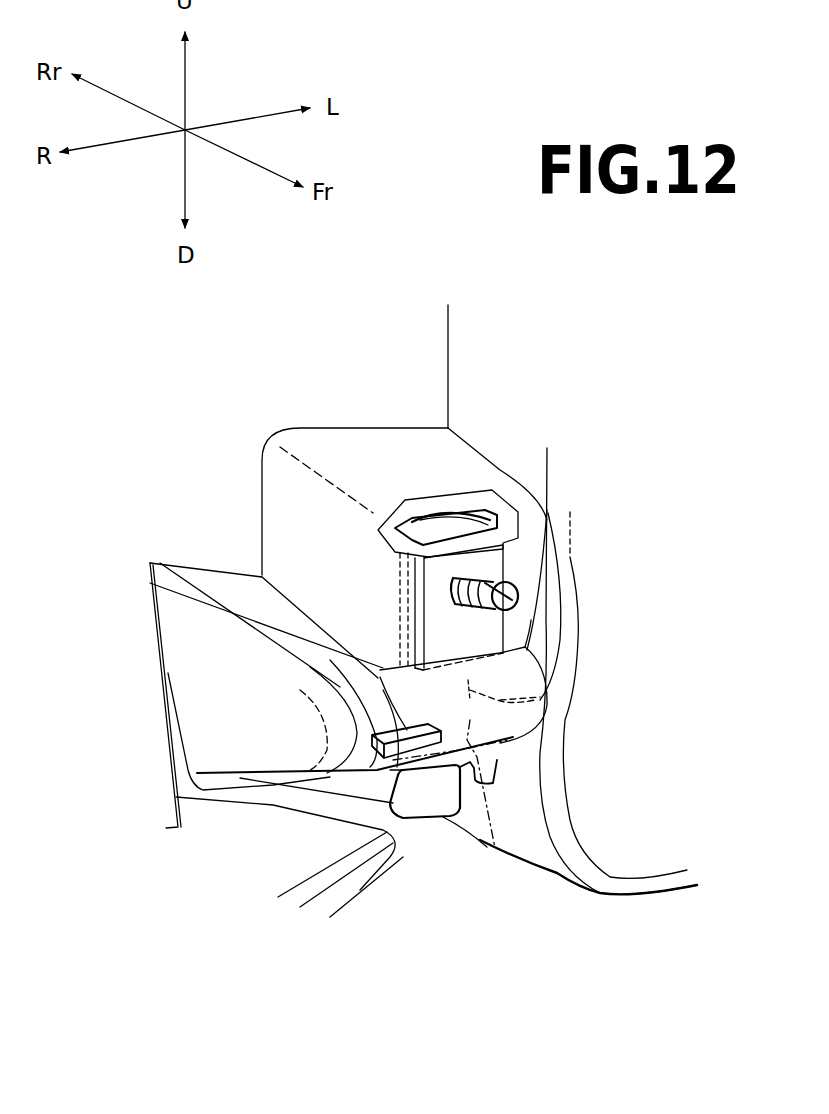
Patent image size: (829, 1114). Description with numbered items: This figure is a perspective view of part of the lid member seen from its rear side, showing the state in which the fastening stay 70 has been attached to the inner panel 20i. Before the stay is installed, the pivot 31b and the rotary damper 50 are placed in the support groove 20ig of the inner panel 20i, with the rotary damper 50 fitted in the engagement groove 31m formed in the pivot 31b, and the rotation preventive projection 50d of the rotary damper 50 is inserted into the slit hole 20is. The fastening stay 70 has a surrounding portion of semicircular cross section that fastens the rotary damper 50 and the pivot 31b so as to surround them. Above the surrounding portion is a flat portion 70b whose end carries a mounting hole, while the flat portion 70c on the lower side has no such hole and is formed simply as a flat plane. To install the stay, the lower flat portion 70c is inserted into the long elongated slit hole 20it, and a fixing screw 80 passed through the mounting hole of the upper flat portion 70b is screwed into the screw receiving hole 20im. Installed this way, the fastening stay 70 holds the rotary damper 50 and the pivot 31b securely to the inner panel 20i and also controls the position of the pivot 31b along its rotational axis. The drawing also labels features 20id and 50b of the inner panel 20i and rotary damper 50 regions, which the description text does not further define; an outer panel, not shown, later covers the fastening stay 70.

The inner panel 20i is at (463, 328).
The top surface of inner panel 20id is at (403, 468).
The flat portion 70b is at (493, 510).
The screw receiving hole 20im is at (403, 573).
The fastening stay 70 is at (398, 625).
The rotation preventive projection 50d is at (338, 680).
The slit hole 20is is at (345, 685).
The rotary damper 50 is at (295, 713).
The fixing screw 80 is at (512, 586).
The pivot 31b is at (567, 657).
The engagement groove 31m is at (543, 720).
The support groove 20ig is at (543, 720).
The lower flange of plate 50b is at (513, 743).
The flat portion 70c is at (420, 807).
The slit hole 20it is at (495, 848).